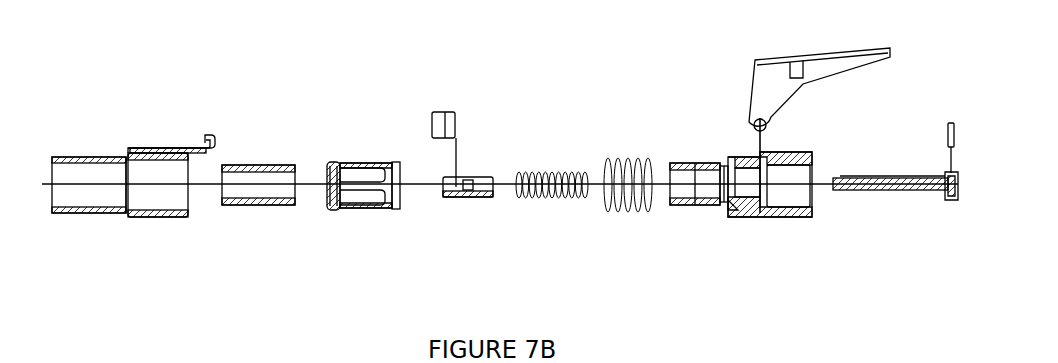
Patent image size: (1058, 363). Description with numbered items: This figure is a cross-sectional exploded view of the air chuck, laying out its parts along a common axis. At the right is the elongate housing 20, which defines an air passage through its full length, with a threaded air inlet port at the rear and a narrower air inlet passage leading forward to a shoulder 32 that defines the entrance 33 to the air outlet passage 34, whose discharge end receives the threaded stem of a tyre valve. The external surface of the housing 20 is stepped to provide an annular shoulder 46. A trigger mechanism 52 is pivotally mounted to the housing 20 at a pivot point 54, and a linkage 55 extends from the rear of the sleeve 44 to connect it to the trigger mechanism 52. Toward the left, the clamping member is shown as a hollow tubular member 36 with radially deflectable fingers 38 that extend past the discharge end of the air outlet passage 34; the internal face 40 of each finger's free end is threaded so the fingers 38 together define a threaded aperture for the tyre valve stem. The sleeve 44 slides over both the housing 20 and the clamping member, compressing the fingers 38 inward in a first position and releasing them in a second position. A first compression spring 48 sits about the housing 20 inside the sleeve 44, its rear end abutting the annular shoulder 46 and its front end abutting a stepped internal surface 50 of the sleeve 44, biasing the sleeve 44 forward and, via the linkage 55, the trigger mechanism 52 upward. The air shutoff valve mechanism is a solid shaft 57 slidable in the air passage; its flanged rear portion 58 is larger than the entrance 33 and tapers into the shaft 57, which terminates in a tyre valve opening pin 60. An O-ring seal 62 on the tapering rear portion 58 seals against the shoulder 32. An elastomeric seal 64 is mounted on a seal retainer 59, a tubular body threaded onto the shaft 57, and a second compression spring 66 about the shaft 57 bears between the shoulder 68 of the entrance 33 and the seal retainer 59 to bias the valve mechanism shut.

The elongate housing 20 is at (820, 264).
The shoulder 32 is at (731, 210).
The entrance 33 is at (700, 183).
The air outlet passage 34 is at (252, 184).
The hollow tubular member 36 is at (393, 162).
The radially deflectable fingers 38 is at (355, 163).
The internal face 40 is at (330, 207).
The sleeve 44 is at (66, 157).
The annular shoulder 46 is at (727, 206).
The first compression spring 48 is at (620, 158).
The stepped internal surface 50 is at (128, 212).
The trigger mechanism 52 is at (824, 51).
The pivot point 54 is at (768, 123).
The linkage 55 is at (208, 135).
The solid shaft 57 is at (912, 177).
The rear portion 58 is at (955, 201).
The seal retainer 59 is at (467, 178).
The tyre valve opening pin 60 is at (838, 191).
The O-ring seal 62 is at (950, 123).
The elastomeric seal 64 is at (441, 112).
The second compression spring 66 is at (560, 172).
The shoulder 68 is at (722, 172).